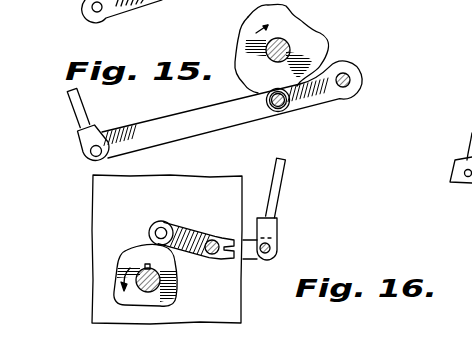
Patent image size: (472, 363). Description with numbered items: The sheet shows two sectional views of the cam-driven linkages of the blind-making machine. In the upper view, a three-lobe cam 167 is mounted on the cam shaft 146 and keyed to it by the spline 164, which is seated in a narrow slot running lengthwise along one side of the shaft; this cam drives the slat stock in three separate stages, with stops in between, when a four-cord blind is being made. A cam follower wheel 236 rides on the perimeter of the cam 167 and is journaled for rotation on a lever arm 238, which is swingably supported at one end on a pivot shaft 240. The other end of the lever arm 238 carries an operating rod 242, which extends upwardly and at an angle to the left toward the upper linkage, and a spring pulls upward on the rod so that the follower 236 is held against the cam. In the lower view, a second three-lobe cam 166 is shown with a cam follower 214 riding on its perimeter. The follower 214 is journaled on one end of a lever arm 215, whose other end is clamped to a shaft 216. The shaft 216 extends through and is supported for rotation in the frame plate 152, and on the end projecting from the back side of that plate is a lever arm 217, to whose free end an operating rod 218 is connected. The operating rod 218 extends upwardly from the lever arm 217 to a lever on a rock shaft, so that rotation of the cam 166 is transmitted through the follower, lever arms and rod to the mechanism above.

In FIG. 15, the cam shaft 146 is at (263, 41).
In FIG. 15, the spline 164 is at (278, 38).
In FIG. 15, the cam 167 is at (304, 35).
In FIG. 15, the lever arm 238 is at (173, 115).
In FIG. 15, the cam follower wheel 236 is at (287, 108).
In FIG. 15, the pivot shaft 240 is at (352, 79).
In FIG. 15, the operating rod 242 is at (79, 110).
In FIG. 16, the frame plate 152 is at (200, 182).
In FIG. 16, the cam 166 is at (126, 260).
In FIG. 16, the cam follower 214 is at (170, 201).
In FIG. 16, the lever arm 215 is at (185, 228).
In FIG. 16, the shaft 216 is at (211, 255).
In FIG. 16, the lever arm 217 is at (247, 260).
In FIG. 16, the operating rod 218 is at (280, 198).